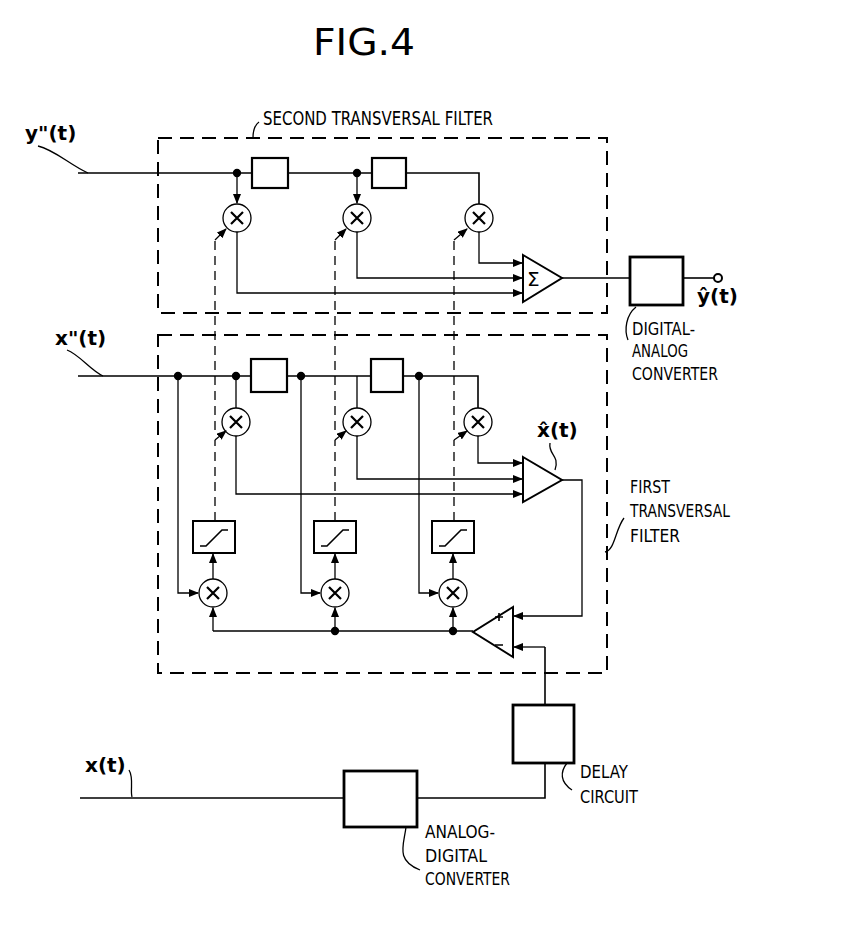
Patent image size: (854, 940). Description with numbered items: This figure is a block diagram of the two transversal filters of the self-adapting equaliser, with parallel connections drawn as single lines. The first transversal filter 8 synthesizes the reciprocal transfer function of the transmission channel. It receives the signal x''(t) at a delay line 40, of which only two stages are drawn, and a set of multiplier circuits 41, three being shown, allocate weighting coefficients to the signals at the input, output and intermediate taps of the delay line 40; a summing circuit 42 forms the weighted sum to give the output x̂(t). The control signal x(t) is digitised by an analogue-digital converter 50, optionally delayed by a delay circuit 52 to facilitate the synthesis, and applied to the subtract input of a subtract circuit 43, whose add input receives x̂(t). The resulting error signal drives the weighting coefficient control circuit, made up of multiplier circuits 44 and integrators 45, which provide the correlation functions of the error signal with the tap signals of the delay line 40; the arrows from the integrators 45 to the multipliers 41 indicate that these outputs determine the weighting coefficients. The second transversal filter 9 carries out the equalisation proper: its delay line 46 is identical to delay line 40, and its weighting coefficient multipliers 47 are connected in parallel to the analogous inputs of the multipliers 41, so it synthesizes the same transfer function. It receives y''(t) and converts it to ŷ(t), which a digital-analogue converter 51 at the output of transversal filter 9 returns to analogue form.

The transversal filter 8 is at (158, 578).
The transversal filter 9 is at (158, 270).
The delay line 40 is at (252, 372).
The multiplier circuits 41 is at (248, 426).
The summing circuit 42 is at (543, 503).
The subtract circuit 43 is at (490, 640).
The multiplier circuits 44 is at (227, 595).
The integrators 45 is at (235, 540).
The delay line 46 is at (252, 168).
The weighting coefficient multipliers 47 is at (251, 220).
The analogue-digital converter 50 is at (388, 788).
The digital-analogue converter 51 is at (658, 275).
The delay circuit 52 is at (553, 742).